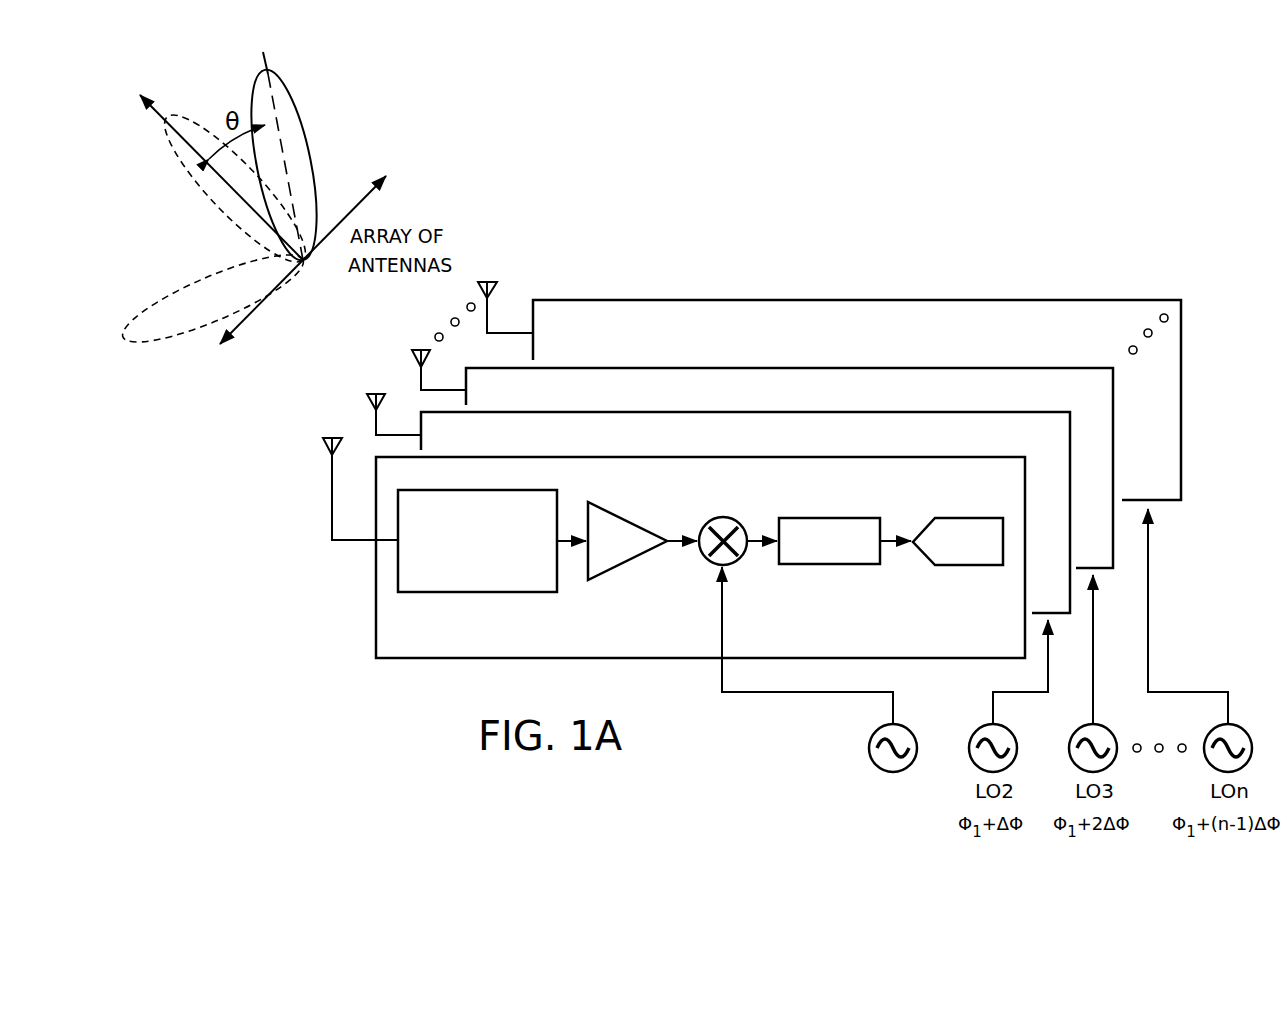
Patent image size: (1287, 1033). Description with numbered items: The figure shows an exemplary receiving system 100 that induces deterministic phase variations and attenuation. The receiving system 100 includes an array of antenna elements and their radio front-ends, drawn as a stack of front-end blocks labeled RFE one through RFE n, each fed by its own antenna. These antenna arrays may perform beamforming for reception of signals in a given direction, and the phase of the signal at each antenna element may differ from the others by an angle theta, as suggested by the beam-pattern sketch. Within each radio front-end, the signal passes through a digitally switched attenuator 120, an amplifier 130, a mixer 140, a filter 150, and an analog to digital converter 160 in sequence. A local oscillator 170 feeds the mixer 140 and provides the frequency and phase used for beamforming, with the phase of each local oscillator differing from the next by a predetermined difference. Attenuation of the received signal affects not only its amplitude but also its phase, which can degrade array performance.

The receiving system 100 is at (995, 137).
The digitally switched attenuator 120 is at (477, 592).
The amplifier 130 is at (630, 563).
The mixer 140 is at (733, 563).
The filter 150 is at (830, 564).
The analog to digital converter 160 is at (962, 565).
The local oscillator 170 is at (870, 742).